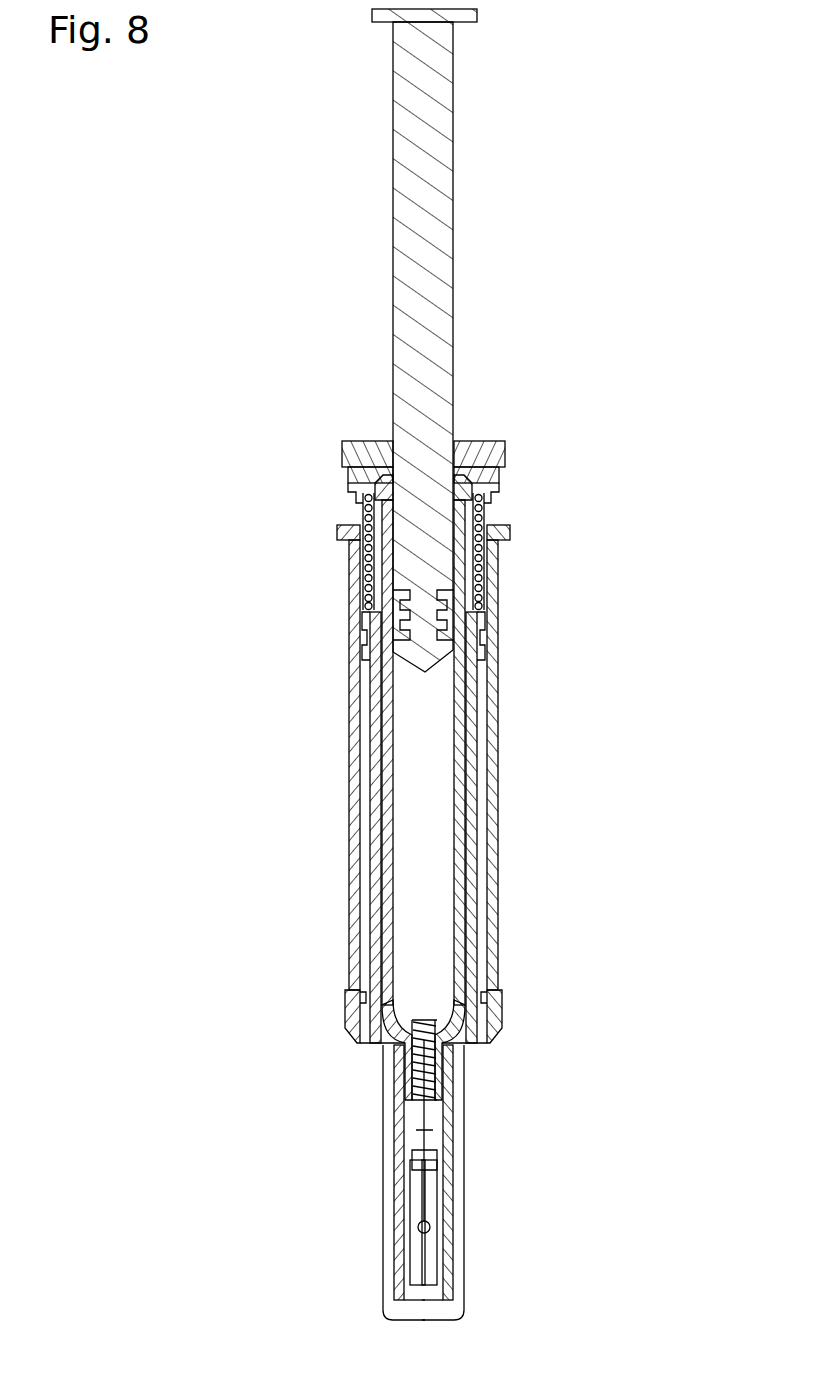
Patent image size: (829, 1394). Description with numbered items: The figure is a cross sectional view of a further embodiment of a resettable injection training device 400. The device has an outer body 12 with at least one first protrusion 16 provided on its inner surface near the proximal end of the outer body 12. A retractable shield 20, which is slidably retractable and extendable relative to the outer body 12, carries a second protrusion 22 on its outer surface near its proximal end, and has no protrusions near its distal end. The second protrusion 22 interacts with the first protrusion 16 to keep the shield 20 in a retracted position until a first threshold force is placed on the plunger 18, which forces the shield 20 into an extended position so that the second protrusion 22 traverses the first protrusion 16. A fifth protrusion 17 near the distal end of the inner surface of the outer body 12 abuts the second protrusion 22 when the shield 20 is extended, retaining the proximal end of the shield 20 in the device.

The resettable injection training device 400 is at (693, 71).
The plunger 18 is at (445, 163).
The outer body 12 is at (495, 793).
The retractable shield 20 is at (478, 727).
The first protrusion 16 is at (490, 650).
The second protrusion 22 is at (470, 641).
The fifth protrusion 17 is at (484, 1003).